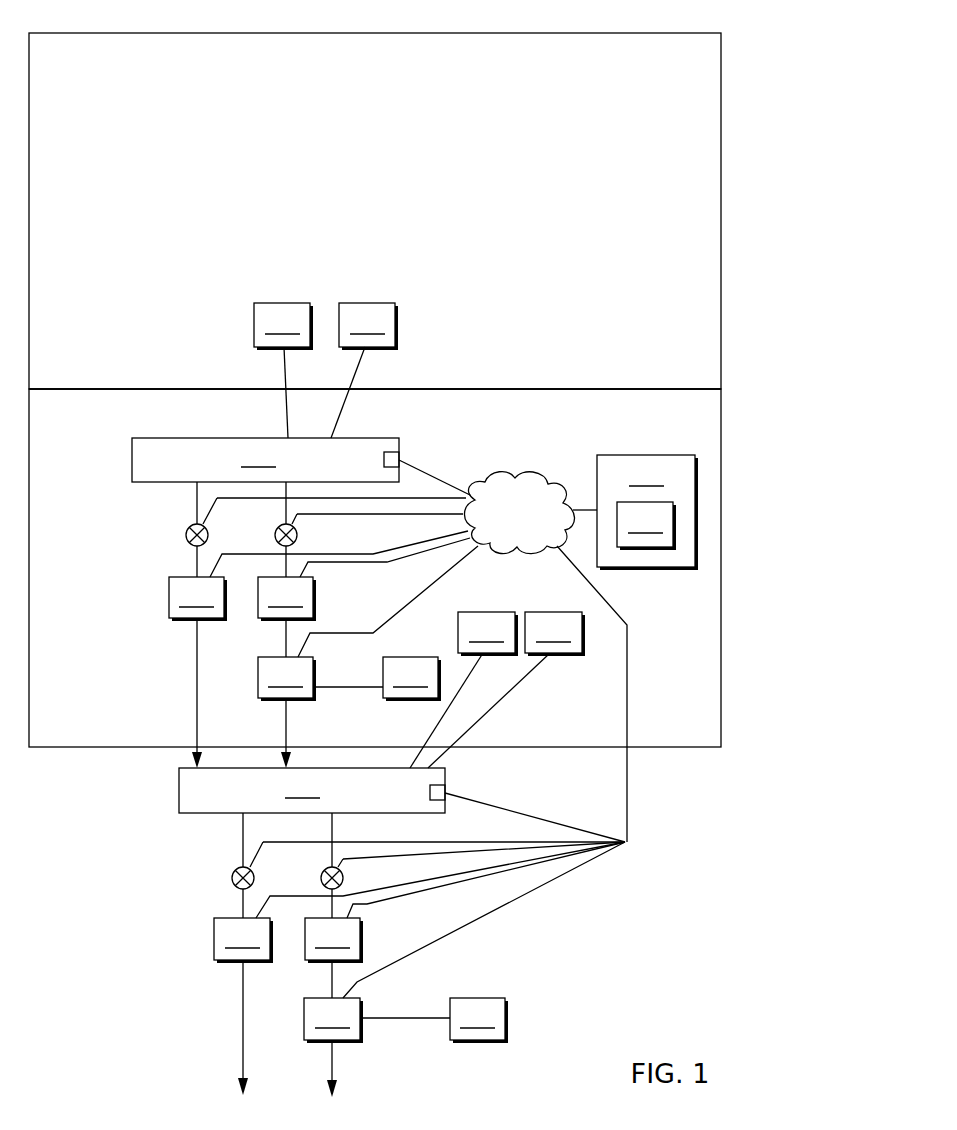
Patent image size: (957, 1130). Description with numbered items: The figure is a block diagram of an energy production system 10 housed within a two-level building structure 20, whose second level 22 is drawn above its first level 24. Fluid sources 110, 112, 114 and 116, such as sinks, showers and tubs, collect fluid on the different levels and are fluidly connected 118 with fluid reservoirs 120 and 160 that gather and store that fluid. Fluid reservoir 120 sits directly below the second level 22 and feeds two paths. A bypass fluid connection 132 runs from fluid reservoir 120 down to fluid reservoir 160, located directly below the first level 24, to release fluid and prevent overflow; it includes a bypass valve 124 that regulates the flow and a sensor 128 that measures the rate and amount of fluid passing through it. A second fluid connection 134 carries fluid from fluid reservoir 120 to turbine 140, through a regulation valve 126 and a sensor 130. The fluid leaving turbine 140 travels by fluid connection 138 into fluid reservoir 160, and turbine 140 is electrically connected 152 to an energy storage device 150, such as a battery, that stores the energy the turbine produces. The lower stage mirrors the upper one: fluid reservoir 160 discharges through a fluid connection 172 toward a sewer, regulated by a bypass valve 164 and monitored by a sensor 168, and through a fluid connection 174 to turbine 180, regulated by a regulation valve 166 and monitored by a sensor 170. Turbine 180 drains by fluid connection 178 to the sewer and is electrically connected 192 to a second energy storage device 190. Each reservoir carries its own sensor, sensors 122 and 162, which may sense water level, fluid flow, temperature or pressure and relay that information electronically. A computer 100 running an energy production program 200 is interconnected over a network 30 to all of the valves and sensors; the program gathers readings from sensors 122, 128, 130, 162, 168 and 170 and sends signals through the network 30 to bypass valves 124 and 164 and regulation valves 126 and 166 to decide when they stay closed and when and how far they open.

The energy production system 10 is at (745, 55).
The building structure 20 is at (672, 204).
The second level 22 is at (617, 389).
The first level 24 is at (703, 747).
The network 30 is at (515, 483).
The computer 100 is at (647, 512).
The energy production program 200 is at (646, 526).
The fluid source 110 is at (283, 326).
The fluid source 112 is at (368, 326).
The fluid source 114 is at (488, 634).
The fluid source 116 is at (555, 634).
The fluid connection 118 is at (283, 367).
The fluid reservoir 120 is at (265, 460).
The sensor 122 is at (390, 452).
The bypass valve 124 is at (187, 528).
The regulation valve 126 is at (276, 528).
The sensor 128 is at (318, 576).
The sensor 130 is at (364, 579).
The fluid connection 132 is at (197, 703).
The fluid connection 134 is at (286, 645).
The fluid connection 138 is at (286, 718).
The turbine 140 is at (368, 623).
The energy storage device 150 is at (412, 679).
The electrical connection 152 is at (348, 687).
The fluid reservoir 160 is at (312, 790).
The sensor 162 is at (437, 785).
The bypass valve 164 is at (233, 872).
The regulation valve 166 is at (322, 872).
The sensor 168 is at (419, 902).
The sensor 170 is at (465, 902).
The fluid connection 172 is at (243, 1045).
The fluid connection 174 is at (332, 985).
The fluid connection 178 is at (332, 1060).
The turbine 180 is at (464, 942).
The energy storage device 190 is at (479, 1020).
The electrical connection 192 is at (407, 1018).